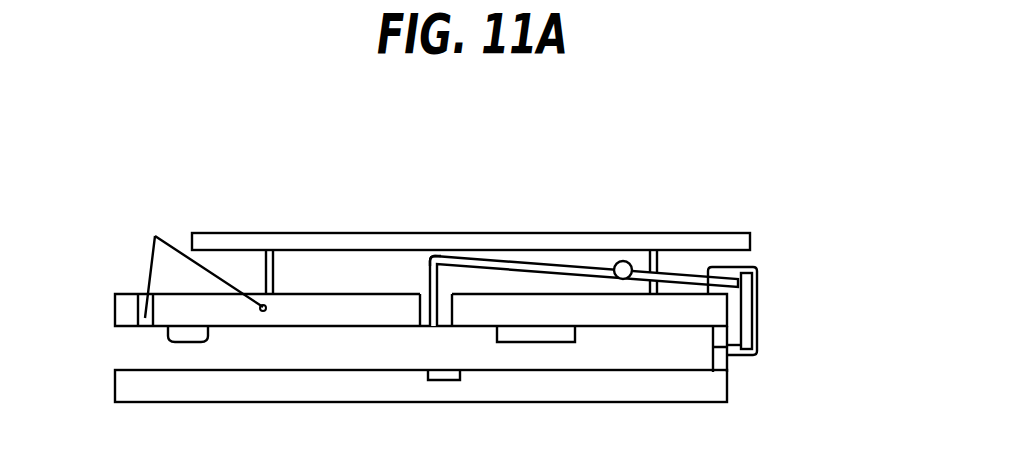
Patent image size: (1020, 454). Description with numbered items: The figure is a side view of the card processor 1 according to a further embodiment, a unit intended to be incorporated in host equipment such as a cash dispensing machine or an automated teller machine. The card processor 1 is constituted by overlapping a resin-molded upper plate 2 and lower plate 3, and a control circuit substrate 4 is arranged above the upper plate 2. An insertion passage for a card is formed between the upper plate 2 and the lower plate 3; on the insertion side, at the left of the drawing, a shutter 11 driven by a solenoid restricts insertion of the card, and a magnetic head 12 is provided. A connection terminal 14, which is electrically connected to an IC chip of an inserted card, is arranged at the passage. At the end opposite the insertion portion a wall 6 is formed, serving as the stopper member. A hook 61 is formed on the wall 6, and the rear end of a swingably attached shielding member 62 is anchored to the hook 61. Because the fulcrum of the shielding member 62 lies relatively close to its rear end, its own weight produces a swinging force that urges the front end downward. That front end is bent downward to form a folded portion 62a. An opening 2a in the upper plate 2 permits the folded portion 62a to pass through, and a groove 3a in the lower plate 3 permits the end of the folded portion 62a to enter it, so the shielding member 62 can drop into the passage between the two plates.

The card processor 1 is at (640, 186).
The upper plate 2 is at (383, 318).
The opening 2a is at (418, 299).
The lower plate 3 is at (245, 380).
The groove 3a is at (437, 380).
The control circuit substrate 4 is at (746, 243).
The wall 6 is at (737, 372).
The hook 61 is at (750, 303).
The shielding member 62 is at (500, 257).
The folded portion 62a is at (430, 275).
The shutter 11 is at (157, 257).
The magnetic head 12 is at (167, 333).
The connection terminal 14 is at (552, 335).